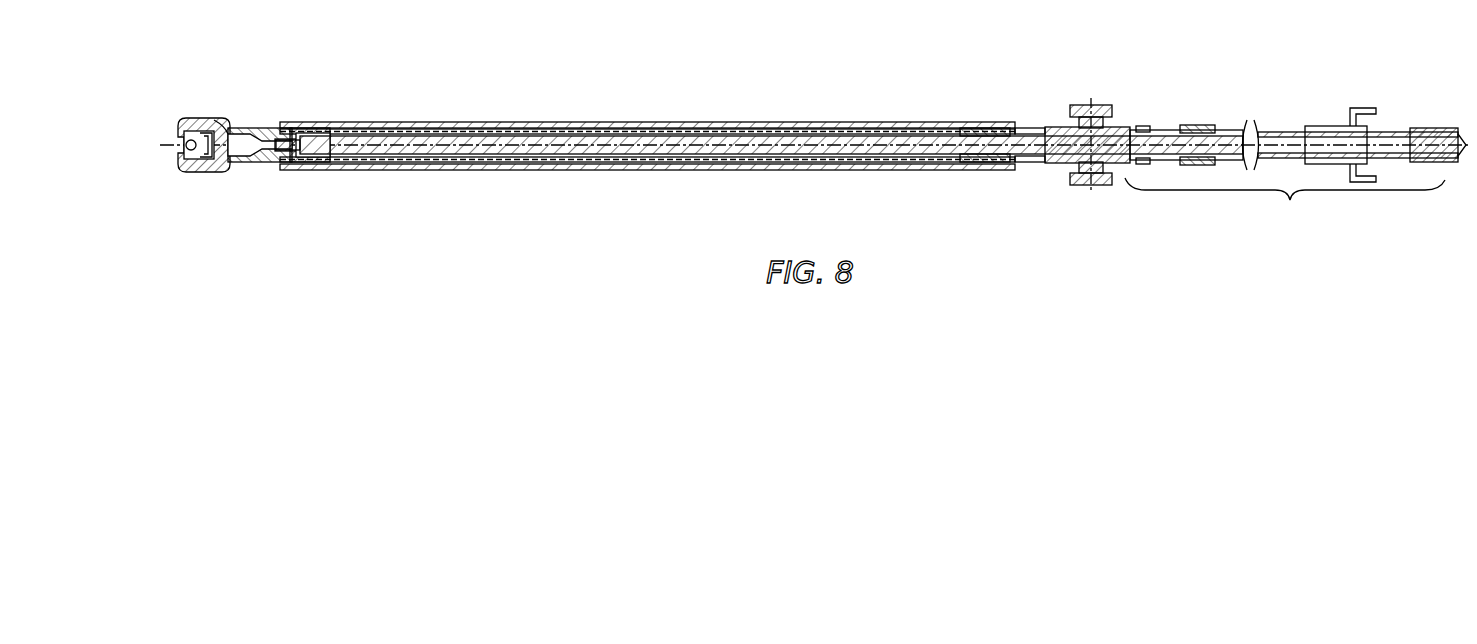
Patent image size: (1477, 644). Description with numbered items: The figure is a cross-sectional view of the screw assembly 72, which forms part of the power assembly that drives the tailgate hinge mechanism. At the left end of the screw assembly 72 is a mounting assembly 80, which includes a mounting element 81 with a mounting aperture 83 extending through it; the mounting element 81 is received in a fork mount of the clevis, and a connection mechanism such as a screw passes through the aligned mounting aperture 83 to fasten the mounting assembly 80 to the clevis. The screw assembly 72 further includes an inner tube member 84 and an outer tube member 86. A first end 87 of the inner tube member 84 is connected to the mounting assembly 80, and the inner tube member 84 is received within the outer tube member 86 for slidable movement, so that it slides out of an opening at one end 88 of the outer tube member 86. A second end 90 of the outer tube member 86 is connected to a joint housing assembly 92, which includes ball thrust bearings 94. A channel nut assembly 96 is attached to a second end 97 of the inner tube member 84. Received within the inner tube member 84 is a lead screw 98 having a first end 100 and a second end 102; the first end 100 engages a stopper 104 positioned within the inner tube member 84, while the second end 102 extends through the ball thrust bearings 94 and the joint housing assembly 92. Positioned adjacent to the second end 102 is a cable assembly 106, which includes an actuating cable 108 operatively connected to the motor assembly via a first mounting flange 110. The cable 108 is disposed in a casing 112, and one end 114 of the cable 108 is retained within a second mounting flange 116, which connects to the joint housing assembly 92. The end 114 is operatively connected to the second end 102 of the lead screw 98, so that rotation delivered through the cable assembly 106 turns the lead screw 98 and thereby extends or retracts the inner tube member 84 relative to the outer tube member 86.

The screw assembly 72 is at (768, 64).
The mounting assembly 80 is at (208, 176).
The mounting element 81 is at (182, 154).
The mounting aperture 83 is at (180, 136).
The inner tube member 84 is at (254, 128).
The outer tube member 86 is at (380, 121).
The first end 87 is at (226, 124).
The one end 88 is at (272, 166).
The second end 90 is at (1066, 174).
The joint housing assembly 92 is at (1096, 187).
The ball thrust bearings 94 is at (1063, 110).
The channel nut assembly 96 is at (969, 170).
The second end 97 is at (960, 126).
The lead screw 98 is at (452, 153).
The first end 100 is at (270, 140).
The second end 102 is at (1143, 128).
The stopper 104 is at (306, 164).
The cable assembly 106 is at (1285, 203).
The actuating cable 108 is at (1392, 128).
The first mounting flange 110 is at (1368, 184).
The casing 112 is at (1298, 125).
The one end 114 is at (1155, 166).
The second mounting flange 116 is at (1178, 126).